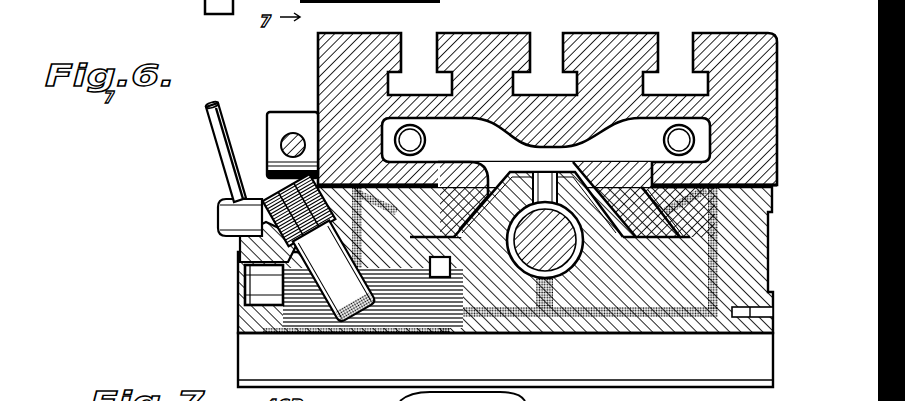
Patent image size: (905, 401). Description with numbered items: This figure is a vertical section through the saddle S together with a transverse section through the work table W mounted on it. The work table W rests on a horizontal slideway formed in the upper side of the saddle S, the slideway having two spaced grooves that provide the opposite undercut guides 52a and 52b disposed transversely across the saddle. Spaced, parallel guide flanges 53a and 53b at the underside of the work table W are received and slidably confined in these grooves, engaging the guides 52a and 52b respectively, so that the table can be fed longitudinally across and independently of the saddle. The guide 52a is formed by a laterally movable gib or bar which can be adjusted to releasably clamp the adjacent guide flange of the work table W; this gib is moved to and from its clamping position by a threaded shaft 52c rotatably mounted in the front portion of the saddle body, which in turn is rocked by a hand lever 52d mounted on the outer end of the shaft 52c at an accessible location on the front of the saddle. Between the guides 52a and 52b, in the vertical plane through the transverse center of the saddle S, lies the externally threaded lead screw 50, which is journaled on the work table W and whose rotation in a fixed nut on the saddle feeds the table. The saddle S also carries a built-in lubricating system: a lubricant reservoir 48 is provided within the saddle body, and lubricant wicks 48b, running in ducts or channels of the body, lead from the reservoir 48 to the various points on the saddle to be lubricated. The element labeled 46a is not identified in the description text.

The work table W is at (500, 47).
The undercut guide (gib or bar) 52a is at (437, 190).
The undercut guide 52b is at (747, 264).
The threaded shaft 52c is at (236, 218).
The hand lever 52d is at (223, 120).
The guide flange 53a is at (487, 160).
The guide flange 53b is at (623, 207).
The lead screw 50 is at (565, 253).
The lubricant reservoir 48 is at (287, 300).
The lubricant wicks 48b is at (360, 247).
The recess 46a is at (285, 268).
The saddle S is at (231, 252).